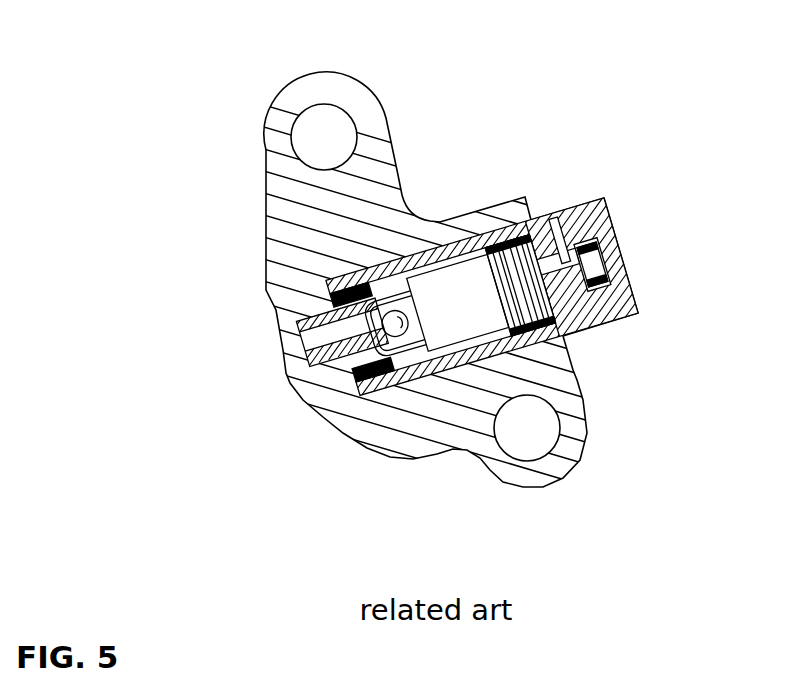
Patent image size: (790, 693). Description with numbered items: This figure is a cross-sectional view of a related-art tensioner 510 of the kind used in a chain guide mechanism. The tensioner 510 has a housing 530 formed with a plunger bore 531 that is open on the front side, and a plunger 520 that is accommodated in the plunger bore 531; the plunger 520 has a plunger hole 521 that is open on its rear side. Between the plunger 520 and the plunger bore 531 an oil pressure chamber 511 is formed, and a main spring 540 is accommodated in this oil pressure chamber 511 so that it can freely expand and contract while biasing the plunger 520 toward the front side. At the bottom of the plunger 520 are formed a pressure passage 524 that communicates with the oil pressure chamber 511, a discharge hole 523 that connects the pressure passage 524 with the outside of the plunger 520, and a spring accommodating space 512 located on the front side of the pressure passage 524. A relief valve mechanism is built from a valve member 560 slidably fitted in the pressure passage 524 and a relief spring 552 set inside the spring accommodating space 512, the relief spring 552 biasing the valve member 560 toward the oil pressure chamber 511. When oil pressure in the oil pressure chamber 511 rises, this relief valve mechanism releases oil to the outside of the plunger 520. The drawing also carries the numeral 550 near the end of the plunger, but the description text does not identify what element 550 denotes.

The tensioner 510 is at (431, 321).
The oil pressure chamber 511 is at (443, 325).
The spring accommodating space 512 is at (628, 261).
The plunger 520 is at (572, 205).
The plunger hole 521 is at (460, 333).
The discharge hole 523 is at (553, 225).
The pressure passage 524 is at (535, 224).
The housing 530 is at (303, 210).
The plunger bore 531 is at (340, 295).
The main spring 540 is at (392, 362).
The end cap 550 is at (630, 268).
The relief spring 552 is at (586, 240).
The valve member 560 is at (611, 320).